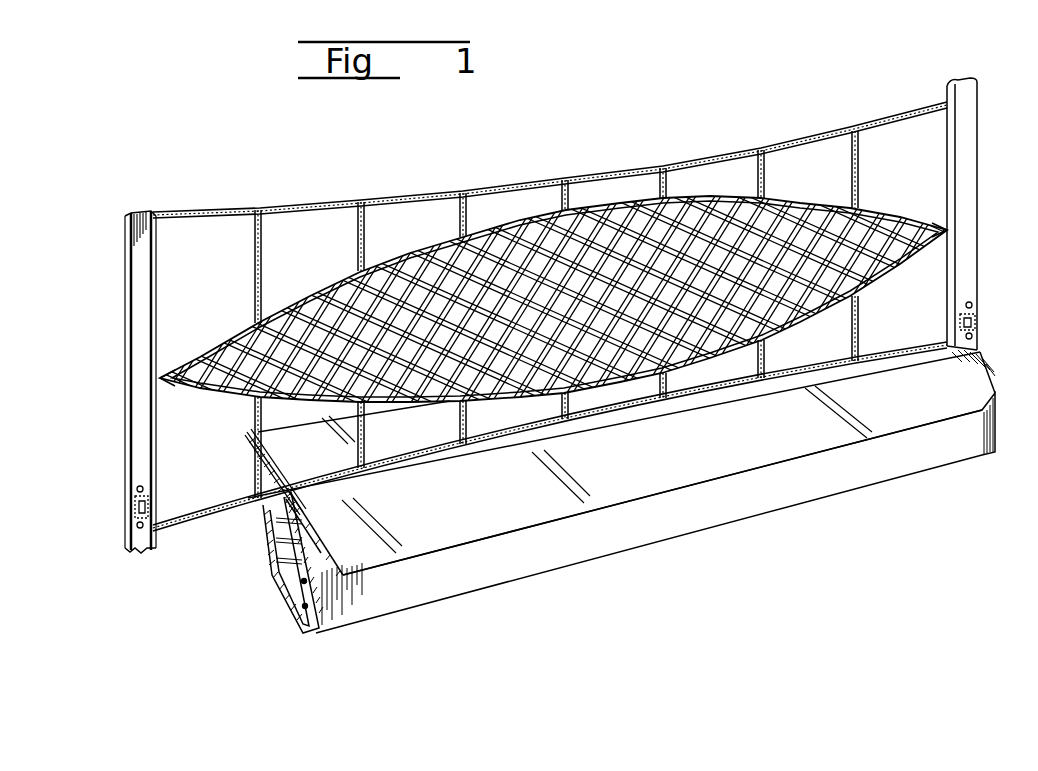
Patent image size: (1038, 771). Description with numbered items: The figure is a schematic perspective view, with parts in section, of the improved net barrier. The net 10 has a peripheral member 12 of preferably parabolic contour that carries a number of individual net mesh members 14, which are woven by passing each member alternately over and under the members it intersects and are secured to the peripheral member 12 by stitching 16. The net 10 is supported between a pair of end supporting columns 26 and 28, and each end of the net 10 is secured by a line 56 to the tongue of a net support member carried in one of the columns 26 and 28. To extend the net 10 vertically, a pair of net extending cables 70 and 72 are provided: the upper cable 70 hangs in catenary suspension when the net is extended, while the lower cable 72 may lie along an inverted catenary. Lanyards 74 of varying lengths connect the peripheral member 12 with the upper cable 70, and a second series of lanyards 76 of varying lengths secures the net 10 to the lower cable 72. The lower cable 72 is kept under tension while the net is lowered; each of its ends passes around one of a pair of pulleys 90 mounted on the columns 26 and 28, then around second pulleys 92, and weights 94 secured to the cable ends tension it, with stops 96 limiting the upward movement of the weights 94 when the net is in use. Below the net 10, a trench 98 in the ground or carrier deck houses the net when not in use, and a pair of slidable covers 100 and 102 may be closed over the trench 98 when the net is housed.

The net 10 is at (536, 385).
The peripheral member 12 is at (536, 385).
The net mesh members 14 is at (282, 322).
The stitching 16 is at (205, 352).
The end supporting column 26 is at (113, 279).
The end supporting column 28 is at (984, 141).
The line 56 is at (950, 228).
The net extending cable 70 is at (428, 193).
The net extending cable 72 is at (413, 458).
The lanyards 74 is at (263, 275).
The lanyards 76 is at (266, 460).
The pulleys 90 is at (137, 526).
The second pulleys 92 is at (136, 489).
The weights 94 is at (147, 506).
The stops 96 is at (148, 494).
The trench 98 is at (270, 592).
The slidable cover 100 is at (251, 432).
The slidable cover 102 is at (368, 568).